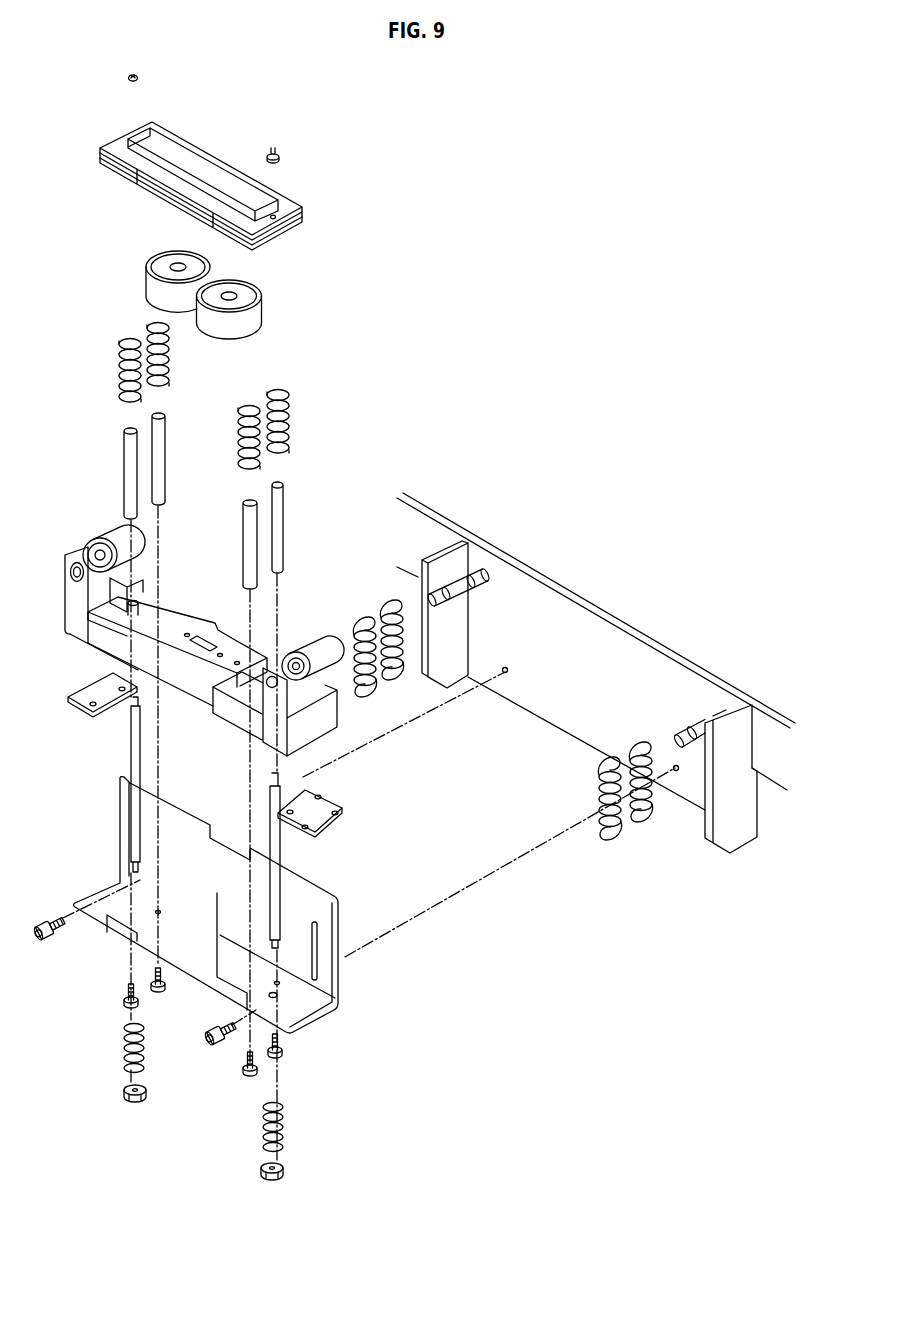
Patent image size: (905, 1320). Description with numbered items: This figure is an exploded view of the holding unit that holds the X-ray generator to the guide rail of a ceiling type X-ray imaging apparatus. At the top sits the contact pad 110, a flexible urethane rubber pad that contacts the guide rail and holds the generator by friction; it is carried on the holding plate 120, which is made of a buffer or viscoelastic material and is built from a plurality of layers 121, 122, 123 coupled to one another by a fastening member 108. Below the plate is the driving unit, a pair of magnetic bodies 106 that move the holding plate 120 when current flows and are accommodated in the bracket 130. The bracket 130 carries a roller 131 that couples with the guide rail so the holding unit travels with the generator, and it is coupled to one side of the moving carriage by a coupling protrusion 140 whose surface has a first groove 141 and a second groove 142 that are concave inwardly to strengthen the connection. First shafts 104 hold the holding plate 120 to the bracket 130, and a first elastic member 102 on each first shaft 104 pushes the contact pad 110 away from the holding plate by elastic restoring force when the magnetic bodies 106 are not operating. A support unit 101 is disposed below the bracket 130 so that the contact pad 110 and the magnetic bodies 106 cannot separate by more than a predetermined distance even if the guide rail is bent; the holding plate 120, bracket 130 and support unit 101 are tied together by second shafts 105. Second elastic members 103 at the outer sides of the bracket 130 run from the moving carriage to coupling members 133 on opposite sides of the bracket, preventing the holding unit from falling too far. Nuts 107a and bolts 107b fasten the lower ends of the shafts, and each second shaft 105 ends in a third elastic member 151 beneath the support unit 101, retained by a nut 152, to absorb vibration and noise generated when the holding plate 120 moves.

The support unit 101 is at (305, 1012).
The first elastic member 102 is at (290, 398).
The second elastic member 103 is at (600, 786).
The first shaft 104 is at (284, 495).
The second shaft 105 is at (279, 855).
The magnetic body 106 is at (260, 315).
The nut 107a is at (290, 1048).
The bolt 107b is at (245, 1075).
The fastening member 108 is at (273, 151).
The contact pad 110 is at (213, 170).
The holding plate 120 is at (262, 192).
The layer 121 is at (302, 206).
The layer 122 is at (302, 214).
The layer 123 is at (302, 227).
The bracket 130 is at (231, 652).
The roller 131 is at (322, 635).
The coupling member 133 is at (330, 820).
The coupling protrusion 140 is at (474, 561).
The first groove 141 is at (477, 569).
The second groove 142 is at (445, 592).
The third elastic member 151 is at (288, 1112).
The nut 152 is at (288, 1168).